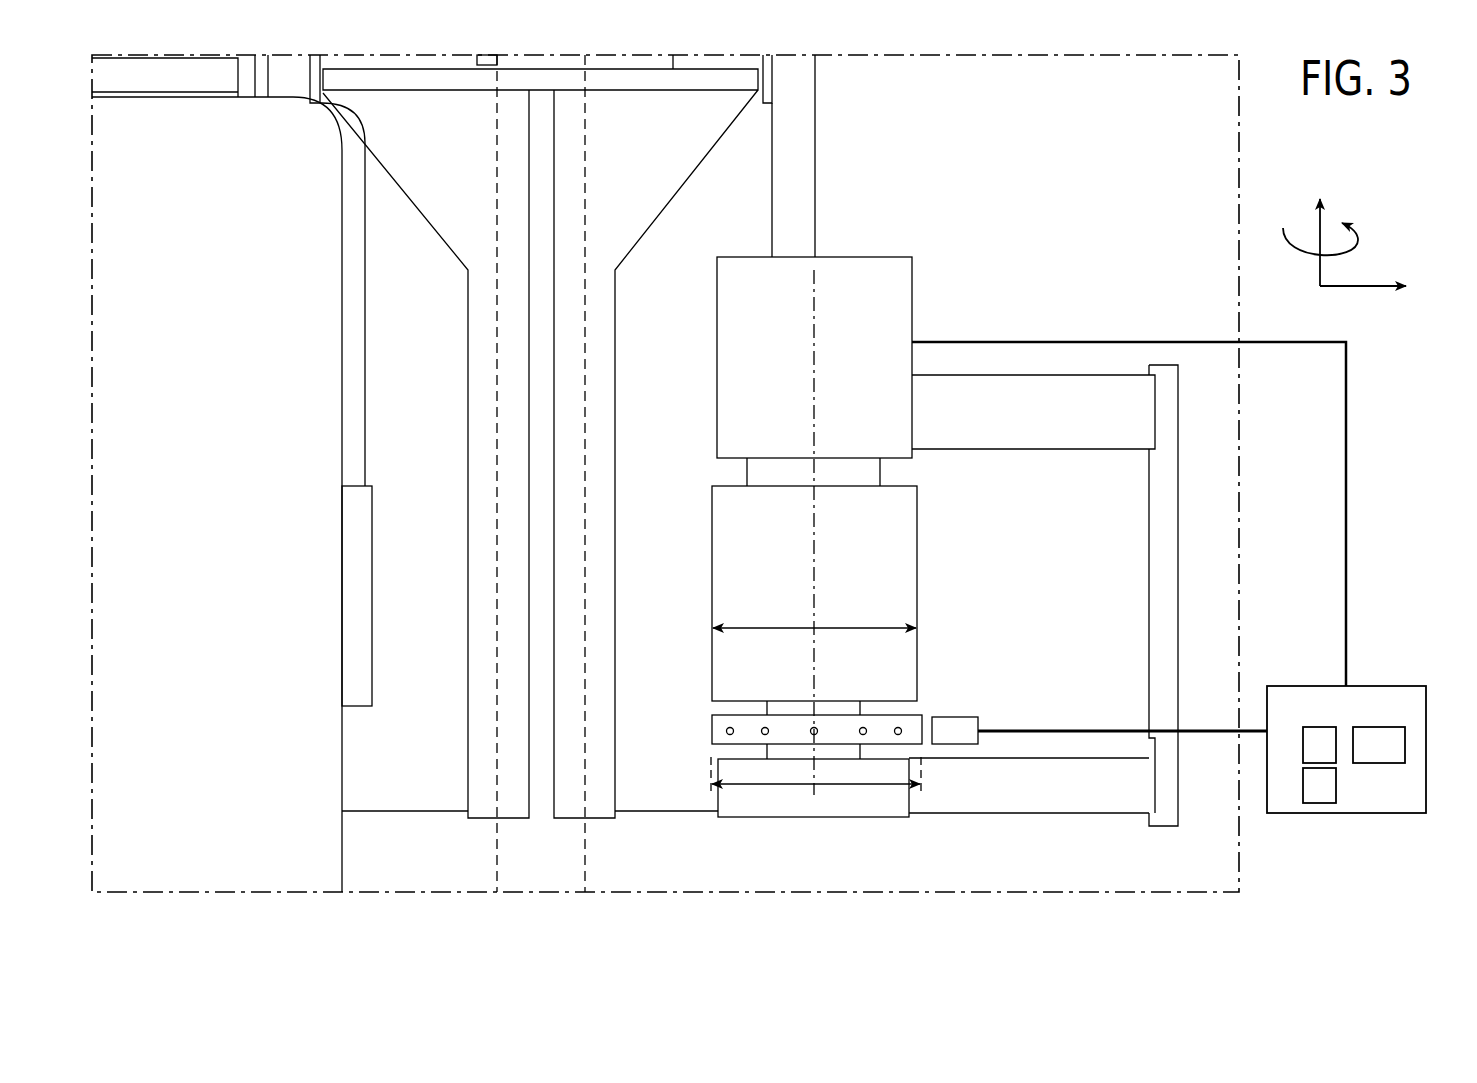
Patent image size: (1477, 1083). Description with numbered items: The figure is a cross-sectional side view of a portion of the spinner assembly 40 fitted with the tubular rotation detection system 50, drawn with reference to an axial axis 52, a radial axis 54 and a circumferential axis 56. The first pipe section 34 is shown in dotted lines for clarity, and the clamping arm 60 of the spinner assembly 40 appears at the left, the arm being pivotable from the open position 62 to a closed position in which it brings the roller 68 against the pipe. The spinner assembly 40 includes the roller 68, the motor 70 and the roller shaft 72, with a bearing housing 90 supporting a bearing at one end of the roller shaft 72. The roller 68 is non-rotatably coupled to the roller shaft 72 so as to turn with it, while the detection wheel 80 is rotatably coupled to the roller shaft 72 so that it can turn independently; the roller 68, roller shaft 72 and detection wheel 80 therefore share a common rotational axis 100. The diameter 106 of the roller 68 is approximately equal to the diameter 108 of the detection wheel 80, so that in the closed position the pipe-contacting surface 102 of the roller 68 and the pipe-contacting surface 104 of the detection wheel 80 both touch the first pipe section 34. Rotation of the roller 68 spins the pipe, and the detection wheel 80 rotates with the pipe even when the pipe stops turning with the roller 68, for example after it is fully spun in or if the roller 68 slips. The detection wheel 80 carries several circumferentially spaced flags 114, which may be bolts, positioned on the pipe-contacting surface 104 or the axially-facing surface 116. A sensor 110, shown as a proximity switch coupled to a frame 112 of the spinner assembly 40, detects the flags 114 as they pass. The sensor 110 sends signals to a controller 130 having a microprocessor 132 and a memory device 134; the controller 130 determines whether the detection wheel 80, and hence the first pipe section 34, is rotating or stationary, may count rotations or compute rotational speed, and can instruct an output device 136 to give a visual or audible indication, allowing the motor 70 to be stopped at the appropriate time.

The first pipe section 34 is at (586, 851).
The spinner assembly 40 is at (936, 121).
The tubular rotation detection system 50 is at (1131, 840).
The axial axis 52 is at (1320, 265).
The radial axis 54 is at (1358, 288).
The circumferential axis 56 is at (1353, 240).
The clamping arm 60 is at (292, 859).
The open position 62 is at (901, 238).
The roller 68 is at (893, 584).
The motor 70 is at (895, 286).
The roller shaft 72 is at (870, 473).
The detection wheel 80 is at (778, 737).
The bearing housing 90 is at (792, 799).
The rotational axis 100 is at (815, 391).
The pipe-contacting surface of the roller 102 is at (712, 605).
The pipe-contacting surface of the detection wheel 104 is at (707, 722).
The diameter of the roller 106 is at (838, 625).
The diameter of the detection wheel 108 is at (837, 787).
The sensor 110 is at (950, 714).
The frame 112 is at (1097, 810).
The flag 114 is at (866, 735).
The axially-facing surface 116 is at (735, 745).
The controller 130 is at (1370, 685).
The microprocessor 132 is at (1300, 742).
The memory device 134 is at (1317, 803).
The output device 136 is at (1380, 763).